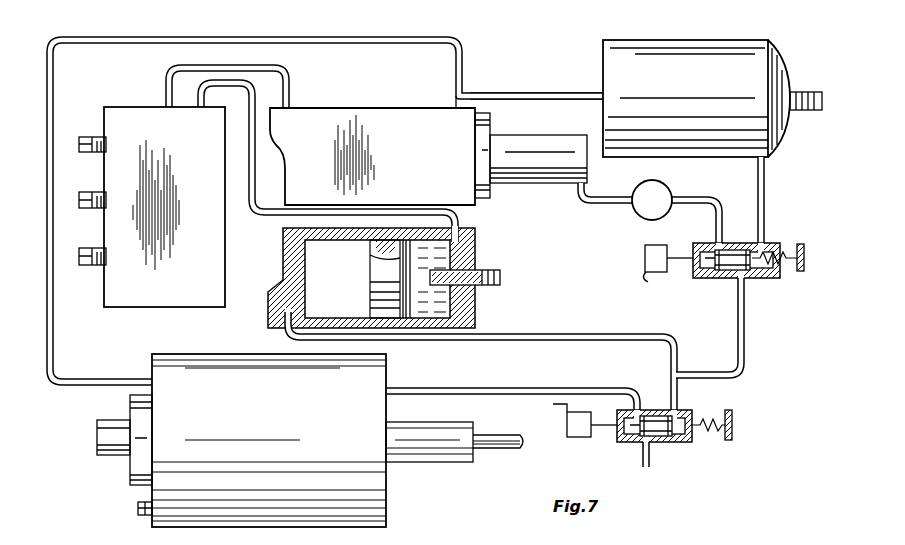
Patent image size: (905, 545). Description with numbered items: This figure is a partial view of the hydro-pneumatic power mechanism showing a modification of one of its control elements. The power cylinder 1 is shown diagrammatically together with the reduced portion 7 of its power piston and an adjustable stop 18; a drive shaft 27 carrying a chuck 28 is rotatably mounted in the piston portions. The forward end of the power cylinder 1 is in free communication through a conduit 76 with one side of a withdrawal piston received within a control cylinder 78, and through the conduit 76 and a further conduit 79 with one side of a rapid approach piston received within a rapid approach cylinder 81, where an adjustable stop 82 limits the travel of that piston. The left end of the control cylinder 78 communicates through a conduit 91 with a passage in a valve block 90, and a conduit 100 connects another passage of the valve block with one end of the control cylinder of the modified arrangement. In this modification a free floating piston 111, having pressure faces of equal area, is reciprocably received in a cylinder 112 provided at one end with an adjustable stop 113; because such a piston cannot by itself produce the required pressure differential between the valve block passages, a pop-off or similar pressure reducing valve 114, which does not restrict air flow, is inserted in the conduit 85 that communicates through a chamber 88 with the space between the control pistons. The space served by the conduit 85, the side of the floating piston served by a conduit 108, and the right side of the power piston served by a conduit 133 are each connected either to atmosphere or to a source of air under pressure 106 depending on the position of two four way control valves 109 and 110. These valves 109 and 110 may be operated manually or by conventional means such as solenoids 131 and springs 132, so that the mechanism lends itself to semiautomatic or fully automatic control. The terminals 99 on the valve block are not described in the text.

The power cylinder 1 is at (386, 512).
The reduced portion of the power piston 7 is at (440, 462).
The adjustable stop 18 is at (138, 508).
The drive shaft 27 is at (510, 448).
The chuck 28 is at (103, 428).
The conduit 76 is at (330, 37).
The control cylinder 78 is at (393, 112).
The conduit 79 is at (508, 93).
The rapid approach cylinder 81 is at (670, 40).
The adjustable stop 82 is at (808, 110).
The conduit 85 is at (593, 198).
The chamber 88 is at (525, 183).
The valve block 90 is at (147, 107).
The conduit 91 is at (290, 98).
The terminals 99 is at (80, 150).
The conduit 100 is at (242, 80).
The source of air under pressure 106 is at (644, 447).
The conduit 108 is at (564, 337).
The four way control valve 109 is at (768, 278).
The four way control valve 110 is at (674, 442).
The free floating piston 111 is at (373, 280).
The cylinder 112 is at (470, 248).
The adjustable stop 113 is at (478, 270).
The pressure reducing valve 114 is at (641, 219).
The solenoid 131 is at (645, 258).
The spring 132 is at (792, 243).
The conduit 133 is at (546, 391).